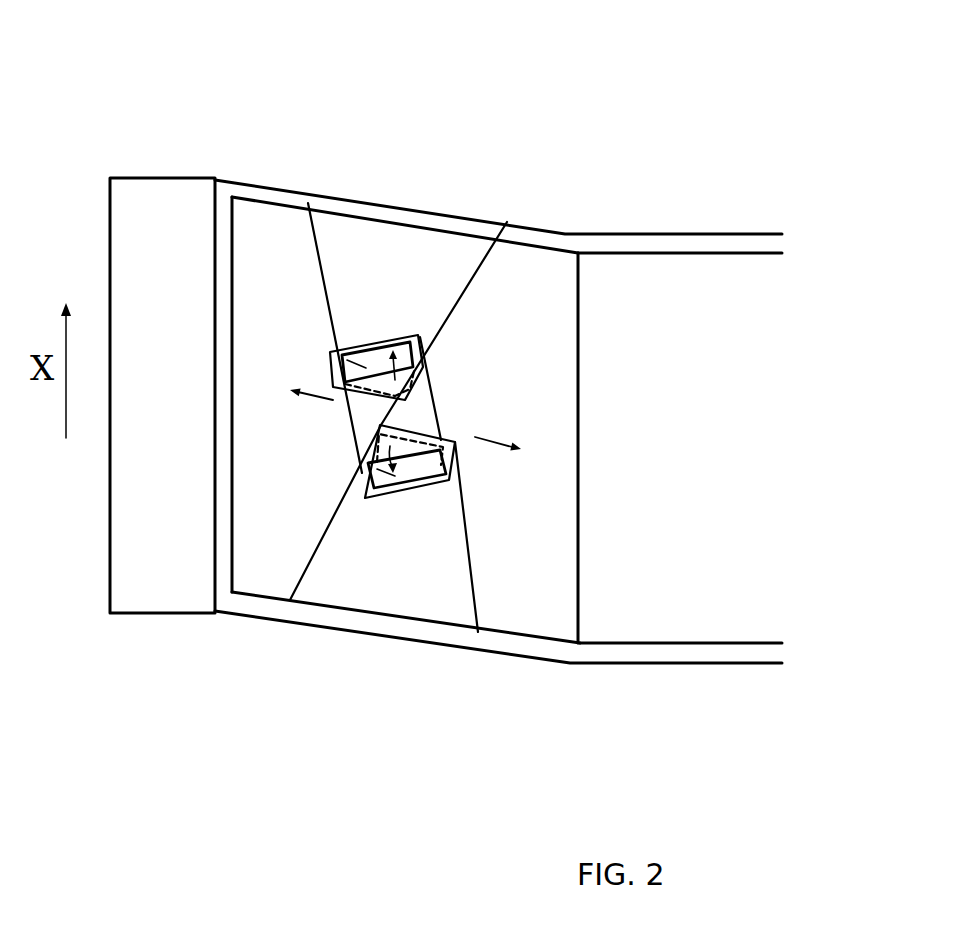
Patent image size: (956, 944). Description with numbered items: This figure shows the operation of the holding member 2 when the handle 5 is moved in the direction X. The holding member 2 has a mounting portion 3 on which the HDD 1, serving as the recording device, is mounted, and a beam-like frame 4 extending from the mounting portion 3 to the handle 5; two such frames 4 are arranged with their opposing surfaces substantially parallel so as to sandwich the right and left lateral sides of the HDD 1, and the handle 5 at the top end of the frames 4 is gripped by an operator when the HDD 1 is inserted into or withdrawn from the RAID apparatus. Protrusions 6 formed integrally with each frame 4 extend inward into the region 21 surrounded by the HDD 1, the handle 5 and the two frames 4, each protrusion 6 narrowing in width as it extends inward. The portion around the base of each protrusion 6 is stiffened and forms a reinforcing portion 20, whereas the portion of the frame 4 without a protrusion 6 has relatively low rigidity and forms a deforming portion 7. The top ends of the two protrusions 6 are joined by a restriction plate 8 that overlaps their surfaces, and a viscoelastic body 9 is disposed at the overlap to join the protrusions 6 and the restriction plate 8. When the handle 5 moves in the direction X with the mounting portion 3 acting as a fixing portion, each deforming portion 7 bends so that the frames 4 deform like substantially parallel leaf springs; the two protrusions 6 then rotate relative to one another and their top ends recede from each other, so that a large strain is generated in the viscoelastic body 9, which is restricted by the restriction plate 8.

The HDD 1 is at (707, 380).
The holding member 2 is at (795, 78).
The mounting portion 3 is at (778, 225).
The frame 4 is at (258, 113).
The handle 5 is at (133, 575).
The protrusion 6 is at (392, 272).
The deforming portion 7 is at (317, 188).
The restriction plate 8 is at (408, 417).
The viscoelastic body 9 is at (333, 357).
The reinforcing portion 20 is at (507, 222).
The region 21 is at (500, 505).